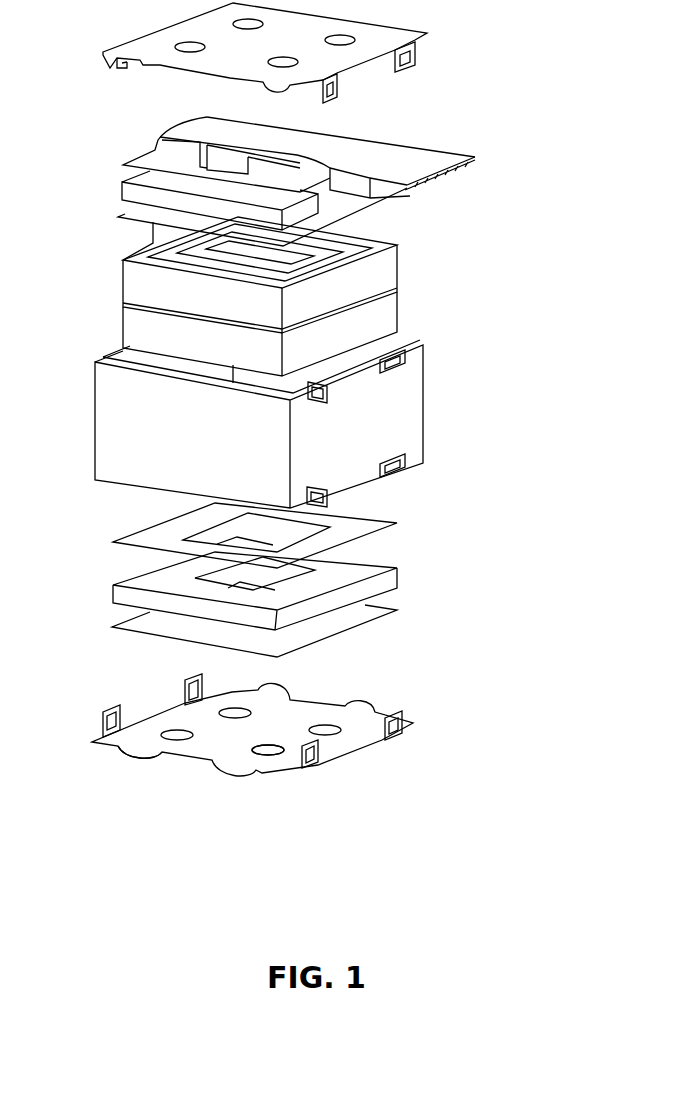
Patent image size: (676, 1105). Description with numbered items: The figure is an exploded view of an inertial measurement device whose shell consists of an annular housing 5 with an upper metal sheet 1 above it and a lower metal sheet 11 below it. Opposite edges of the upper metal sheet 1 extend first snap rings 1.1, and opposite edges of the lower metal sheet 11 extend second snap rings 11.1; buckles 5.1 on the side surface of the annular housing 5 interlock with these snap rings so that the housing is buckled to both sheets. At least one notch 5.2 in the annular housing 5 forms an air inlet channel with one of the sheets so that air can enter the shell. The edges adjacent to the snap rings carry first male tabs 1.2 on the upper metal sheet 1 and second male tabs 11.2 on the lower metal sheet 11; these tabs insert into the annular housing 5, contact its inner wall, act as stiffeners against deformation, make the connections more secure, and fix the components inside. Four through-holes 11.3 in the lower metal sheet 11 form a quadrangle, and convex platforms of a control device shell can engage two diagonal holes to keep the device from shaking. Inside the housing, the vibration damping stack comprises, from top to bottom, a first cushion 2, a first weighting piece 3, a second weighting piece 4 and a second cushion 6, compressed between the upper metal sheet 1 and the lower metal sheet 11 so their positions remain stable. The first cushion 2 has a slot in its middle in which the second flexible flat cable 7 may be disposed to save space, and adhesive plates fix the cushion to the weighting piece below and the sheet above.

The upper metal sheet 1 is at (427, 33).
The first snap ring 1.1 is at (413, 67).
The first male tab 1.2 is at (153, 67).
The first cushion 2 is at (130, 188).
The first weighting piece 3 is at (393, 258).
The second weighting piece 4 is at (390, 310).
The annular housing 5 is at (407, 412).
The buckle 5.1 is at (407, 467).
The notch 5.2 is at (407, 368).
The second cushion 6 is at (380, 590).
The second flexible flat cable 7 is at (437, 160).
The lower metal sheet 11 is at (382, 742).
The second snap ring 11.1 is at (312, 763).
The second male tab 11.2 is at (138, 750).
The through-hole 11.3 is at (267, 748).